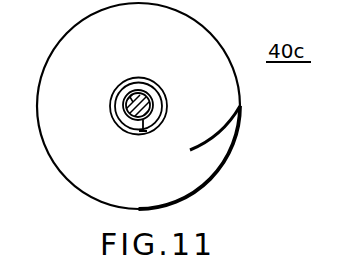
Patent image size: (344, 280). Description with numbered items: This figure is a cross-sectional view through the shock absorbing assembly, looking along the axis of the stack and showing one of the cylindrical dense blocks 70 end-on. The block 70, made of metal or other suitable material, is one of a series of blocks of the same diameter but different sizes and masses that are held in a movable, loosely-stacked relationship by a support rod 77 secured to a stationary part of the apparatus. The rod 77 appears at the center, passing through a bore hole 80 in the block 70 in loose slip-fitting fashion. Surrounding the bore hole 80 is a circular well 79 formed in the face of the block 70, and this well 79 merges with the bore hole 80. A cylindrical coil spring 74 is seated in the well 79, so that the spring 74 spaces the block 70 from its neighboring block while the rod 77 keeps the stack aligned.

The dense block 70 is at (215, 148).
The coil spring 74 is at (122, 122).
The support rod 77 is at (147, 99).
The circular well 79 is at (168, 99).
The bore hole 80 is at (130, 97).